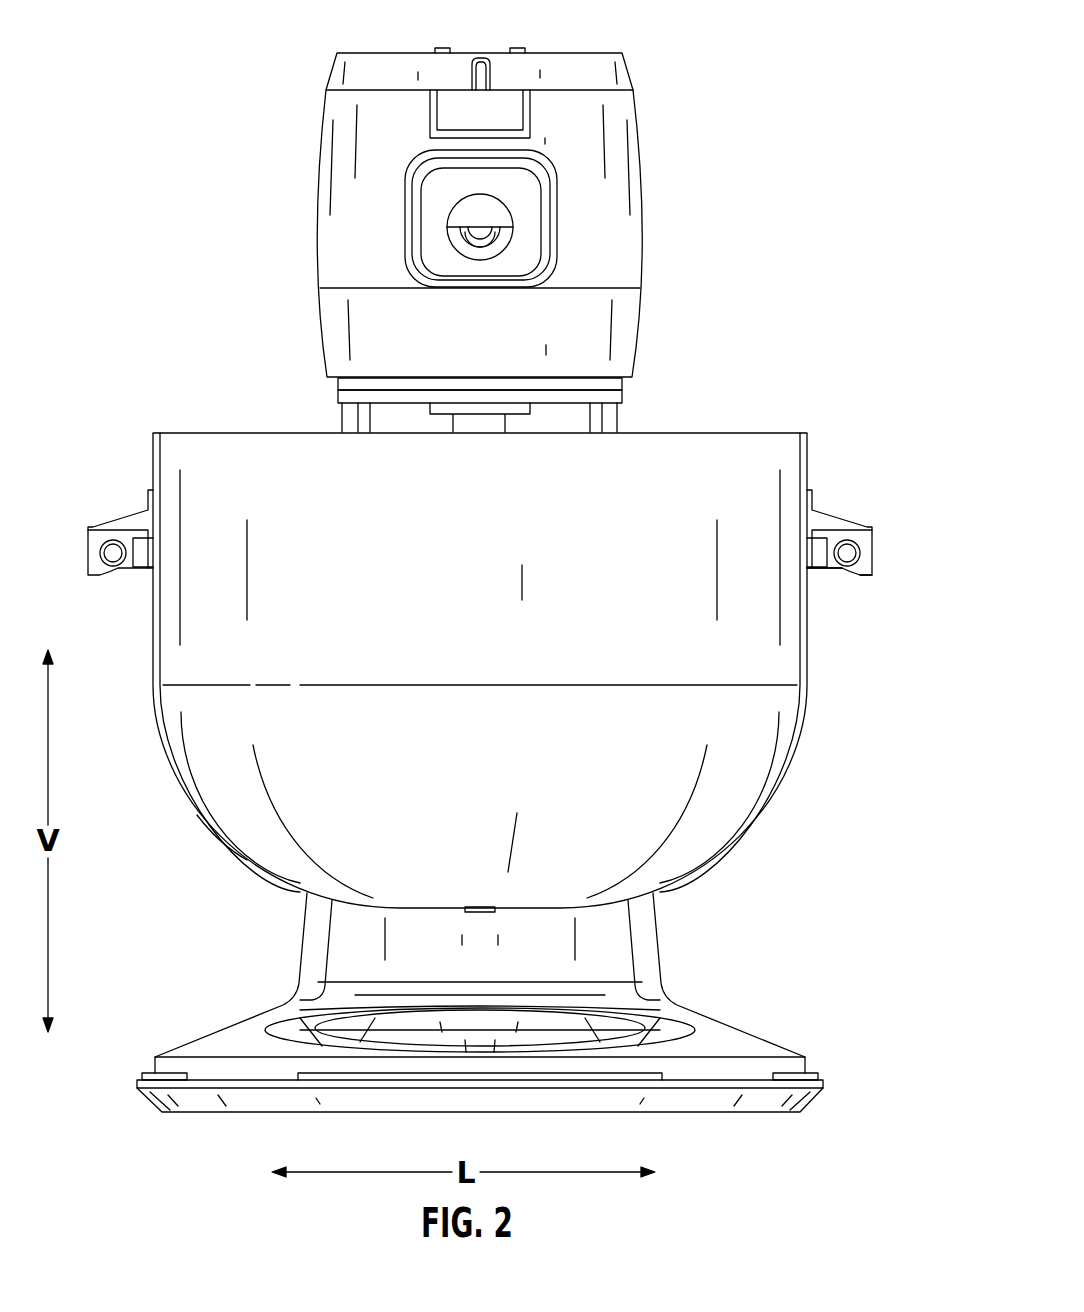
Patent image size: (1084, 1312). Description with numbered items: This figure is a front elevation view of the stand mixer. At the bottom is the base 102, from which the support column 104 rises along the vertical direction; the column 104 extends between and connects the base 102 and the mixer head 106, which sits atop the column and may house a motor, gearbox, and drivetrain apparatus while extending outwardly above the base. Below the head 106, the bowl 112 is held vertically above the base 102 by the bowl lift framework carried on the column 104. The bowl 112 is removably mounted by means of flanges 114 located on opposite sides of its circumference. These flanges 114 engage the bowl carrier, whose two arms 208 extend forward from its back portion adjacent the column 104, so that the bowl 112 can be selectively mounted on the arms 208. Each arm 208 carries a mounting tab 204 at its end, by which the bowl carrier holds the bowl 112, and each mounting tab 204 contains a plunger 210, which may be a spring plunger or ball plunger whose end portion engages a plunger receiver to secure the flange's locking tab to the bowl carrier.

The base 102 is at (718, 1070).
The support column 104 is at (622, 953).
The mixer head 106 is at (580, 107).
The bowl 112 is at (165, 632).
The flange 114 is at (147, 497).
The mounting tab 204 is at (858, 540).
The arm 208 is at (878, 565).
The plunger 210 is at (846, 556).